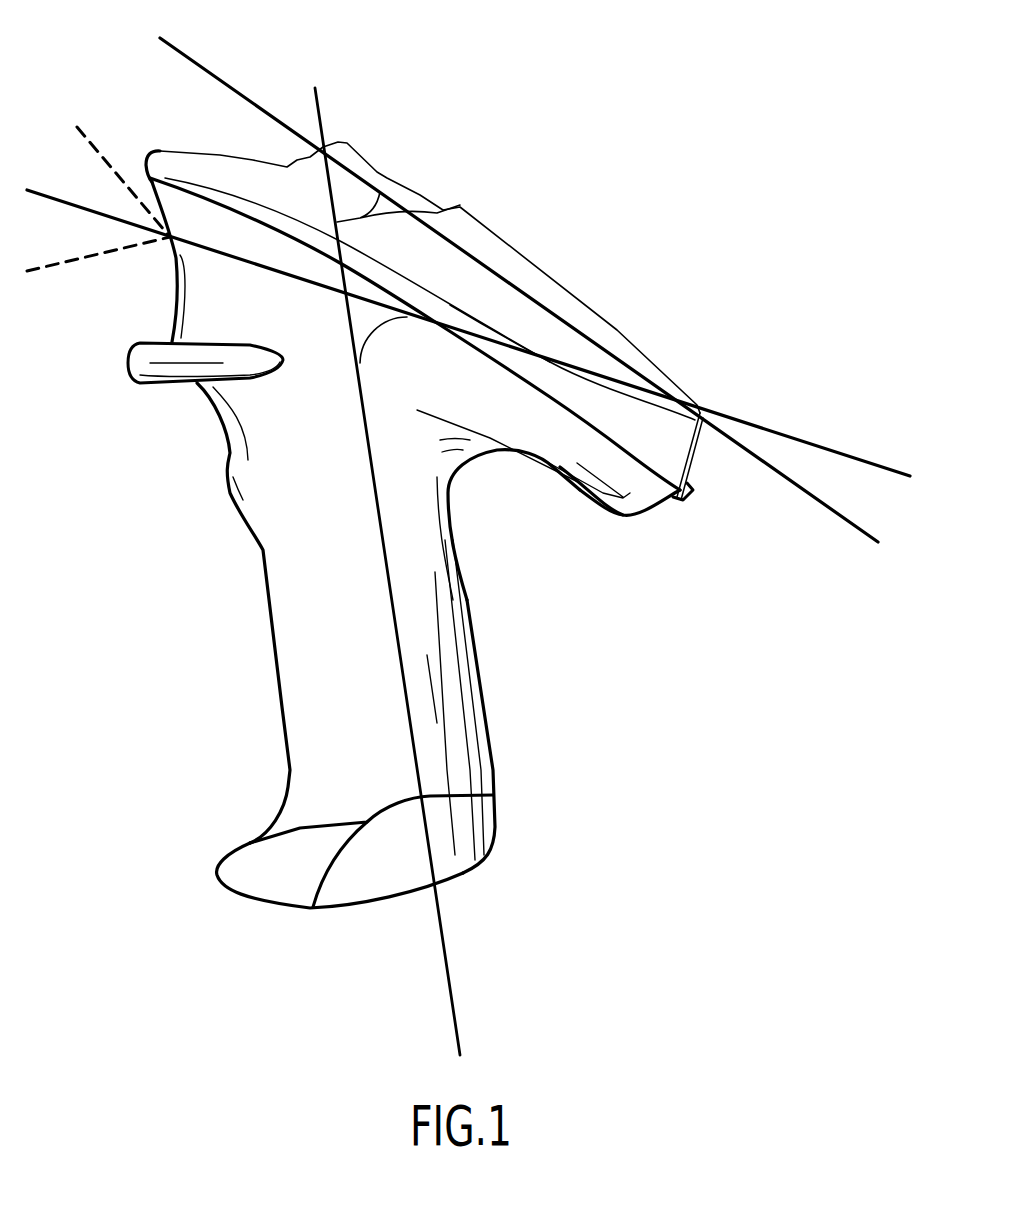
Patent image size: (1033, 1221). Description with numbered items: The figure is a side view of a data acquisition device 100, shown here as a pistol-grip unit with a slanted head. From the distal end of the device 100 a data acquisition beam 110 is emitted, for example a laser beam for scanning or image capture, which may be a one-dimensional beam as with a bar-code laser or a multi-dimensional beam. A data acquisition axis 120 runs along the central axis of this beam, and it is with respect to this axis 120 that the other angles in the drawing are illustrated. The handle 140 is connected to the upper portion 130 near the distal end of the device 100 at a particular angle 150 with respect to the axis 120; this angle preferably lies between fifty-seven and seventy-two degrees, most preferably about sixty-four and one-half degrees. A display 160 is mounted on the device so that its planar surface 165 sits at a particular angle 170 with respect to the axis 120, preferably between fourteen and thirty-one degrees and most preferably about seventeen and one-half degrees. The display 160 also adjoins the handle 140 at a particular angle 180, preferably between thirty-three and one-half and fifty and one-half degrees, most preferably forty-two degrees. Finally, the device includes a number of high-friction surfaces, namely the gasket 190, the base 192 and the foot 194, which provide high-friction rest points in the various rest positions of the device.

The data acquisition device 100 is at (600, 612).
The data acquisition beam 110 is at (45, 270).
The data acquisition axis 120 is at (768, 428).
The upper portion 130 is at (683, 497).
The handle 140 is at (282, 705).
The angle 150 is at (392, 347).
The display 160 is at (552, 178).
The planar surface 165 is at (640, 332).
The angle 170 is at (553, 357).
The angle 180 is at (447, 215).
The gasket 190 is at (690, 465).
The base 192 is at (490, 850).
The foot 194 is at (133, 386).